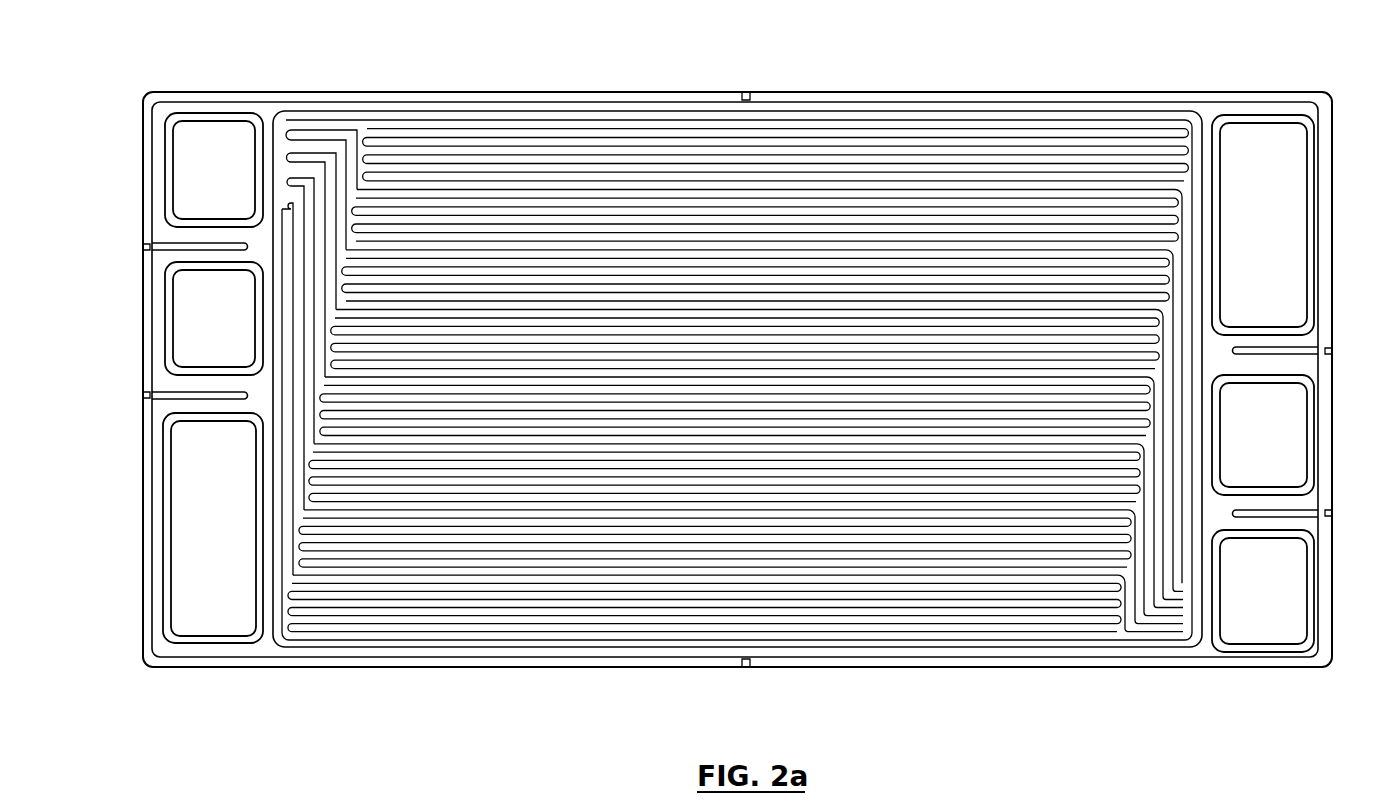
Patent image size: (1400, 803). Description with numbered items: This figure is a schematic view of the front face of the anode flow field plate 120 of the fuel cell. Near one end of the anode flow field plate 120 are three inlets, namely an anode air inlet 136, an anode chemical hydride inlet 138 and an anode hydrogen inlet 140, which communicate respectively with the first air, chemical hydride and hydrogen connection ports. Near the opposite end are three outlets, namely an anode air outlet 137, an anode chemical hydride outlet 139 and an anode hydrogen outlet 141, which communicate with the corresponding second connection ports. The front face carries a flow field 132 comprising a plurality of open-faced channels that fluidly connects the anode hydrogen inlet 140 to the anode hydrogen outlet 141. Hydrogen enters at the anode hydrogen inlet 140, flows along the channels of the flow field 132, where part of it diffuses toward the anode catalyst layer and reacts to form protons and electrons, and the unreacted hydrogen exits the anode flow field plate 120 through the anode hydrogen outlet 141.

The anode flow field plate 120 is at (889, 703).
The flow field 132 is at (960, 140).
The anode air inlet 136 is at (1290, 238).
The anode air outlet 137 is at (190, 523).
The anode chemical hydride inlet 138 is at (1290, 448).
The anode chemical hydride outlet 139 is at (190, 320).
The anode hydrogen inlet 140 is at (1255, 618).
The anode hydrogen outlet 141 is at (190, 178).